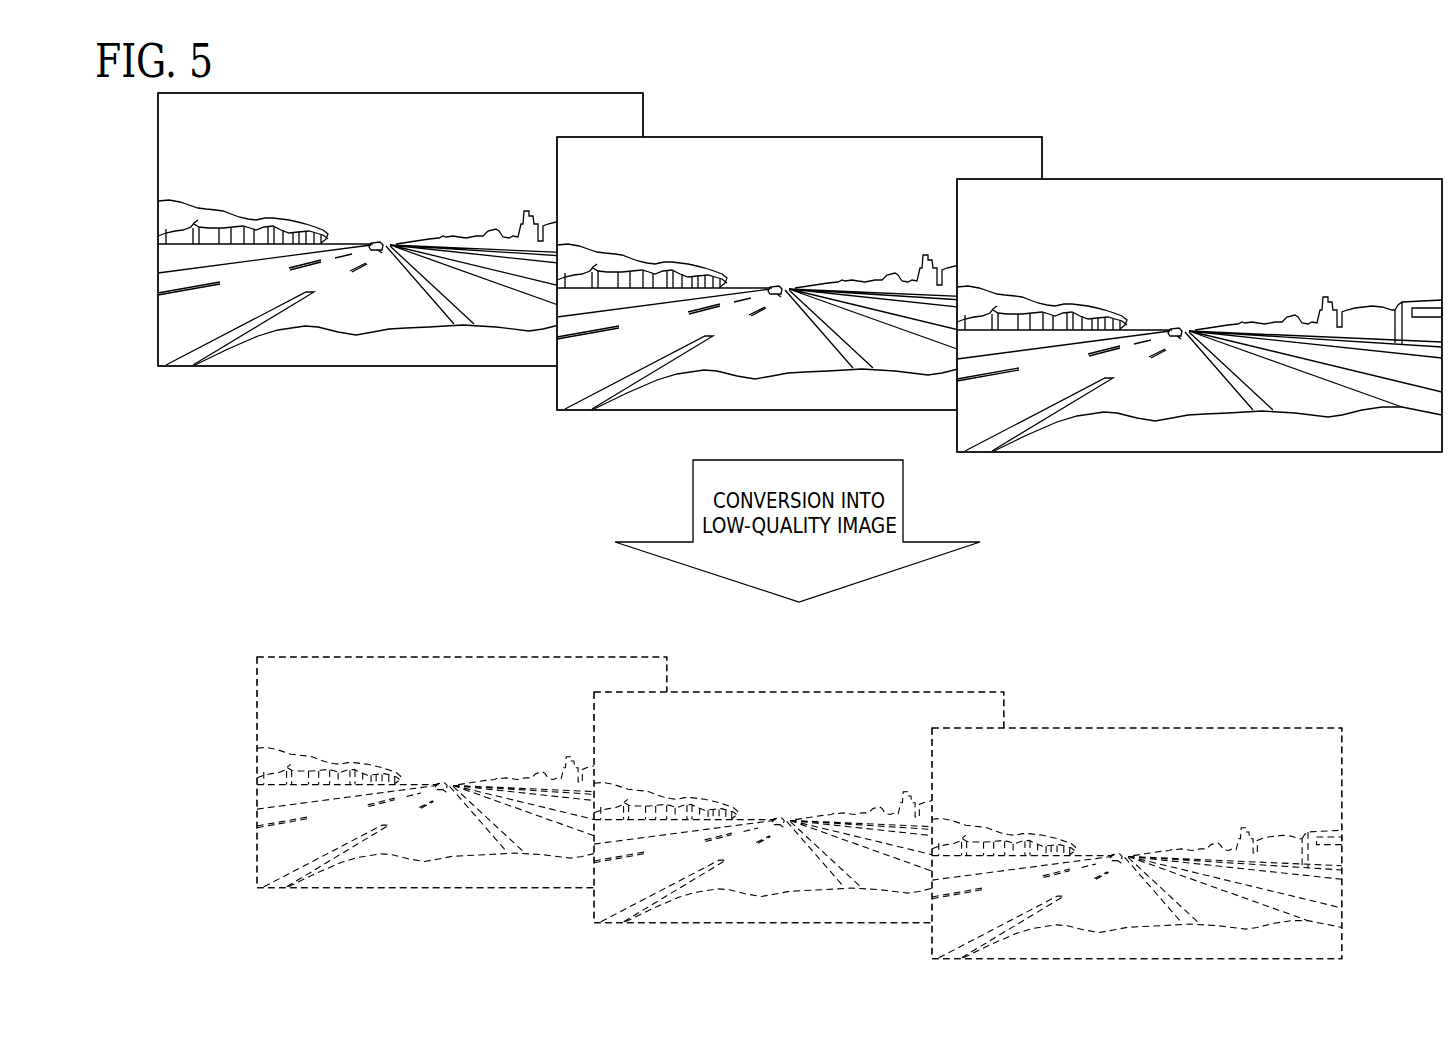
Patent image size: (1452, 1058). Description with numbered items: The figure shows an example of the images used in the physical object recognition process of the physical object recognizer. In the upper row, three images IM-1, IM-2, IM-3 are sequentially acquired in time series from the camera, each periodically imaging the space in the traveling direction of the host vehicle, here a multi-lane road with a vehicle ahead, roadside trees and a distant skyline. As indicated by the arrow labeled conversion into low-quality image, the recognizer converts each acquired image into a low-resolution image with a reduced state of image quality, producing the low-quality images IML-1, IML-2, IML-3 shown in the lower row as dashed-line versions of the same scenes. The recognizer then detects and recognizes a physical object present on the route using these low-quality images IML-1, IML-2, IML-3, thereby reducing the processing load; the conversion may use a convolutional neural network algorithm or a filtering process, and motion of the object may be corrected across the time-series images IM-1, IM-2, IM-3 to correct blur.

The image IM-1 is at (562, 93).
The image IM-2 is at (962, 137).
The image IM-3 is at (1362, 179).
The low-quality image IML-1 is at (574, 657).
The low-quality image IML-2 is at (913, 692).
The low-quality image IML-3 is at (1253, 728).